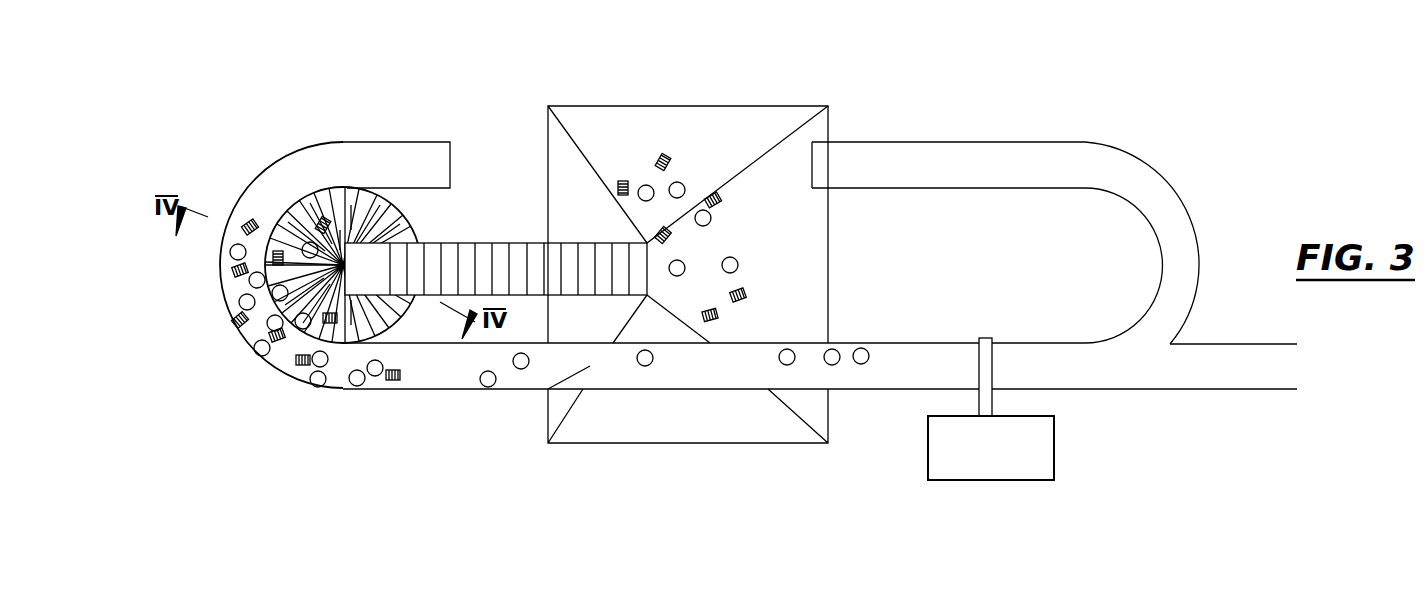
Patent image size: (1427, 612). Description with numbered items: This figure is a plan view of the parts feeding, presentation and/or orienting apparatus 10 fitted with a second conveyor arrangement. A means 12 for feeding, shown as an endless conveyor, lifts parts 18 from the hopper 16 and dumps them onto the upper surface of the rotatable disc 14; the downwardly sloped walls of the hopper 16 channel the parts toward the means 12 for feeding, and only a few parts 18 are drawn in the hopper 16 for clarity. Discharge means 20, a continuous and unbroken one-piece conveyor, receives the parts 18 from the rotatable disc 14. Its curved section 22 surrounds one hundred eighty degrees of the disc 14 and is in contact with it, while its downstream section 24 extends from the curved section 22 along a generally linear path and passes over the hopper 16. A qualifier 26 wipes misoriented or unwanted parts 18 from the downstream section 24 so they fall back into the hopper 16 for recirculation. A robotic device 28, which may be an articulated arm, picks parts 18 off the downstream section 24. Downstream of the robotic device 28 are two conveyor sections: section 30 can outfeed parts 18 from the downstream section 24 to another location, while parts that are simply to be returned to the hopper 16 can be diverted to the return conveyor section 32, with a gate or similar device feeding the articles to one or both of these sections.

The parts feeding, presentation and/or orienting apparatus 10 is at (945, 115).
The means for feeding 12 is at (493, 258).
The rotatable disc 14 is at (397, 240).
The hopper 16 is at (776, 120).
The parts 18 is at (678, 182).
The discharge means 20 is at (262, 403).
The curved section 22 is at (224, 272).
The downstream section 24 is at (503, 383).
The qualifier 26 is at (565, 385).
The robotic device 28 is at (1056, 425).
The conveyor section 30 is at (1234, 358).
The return conveyor section 32 is at (1130, 162).